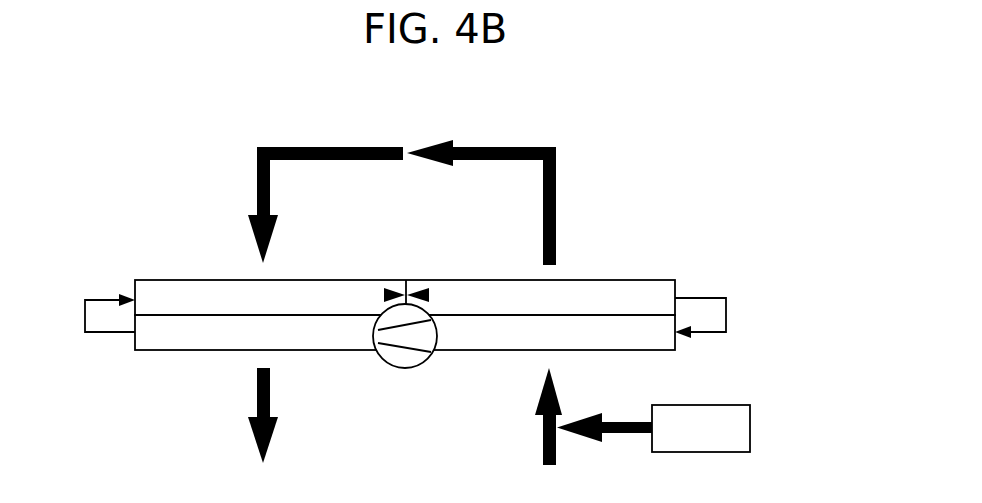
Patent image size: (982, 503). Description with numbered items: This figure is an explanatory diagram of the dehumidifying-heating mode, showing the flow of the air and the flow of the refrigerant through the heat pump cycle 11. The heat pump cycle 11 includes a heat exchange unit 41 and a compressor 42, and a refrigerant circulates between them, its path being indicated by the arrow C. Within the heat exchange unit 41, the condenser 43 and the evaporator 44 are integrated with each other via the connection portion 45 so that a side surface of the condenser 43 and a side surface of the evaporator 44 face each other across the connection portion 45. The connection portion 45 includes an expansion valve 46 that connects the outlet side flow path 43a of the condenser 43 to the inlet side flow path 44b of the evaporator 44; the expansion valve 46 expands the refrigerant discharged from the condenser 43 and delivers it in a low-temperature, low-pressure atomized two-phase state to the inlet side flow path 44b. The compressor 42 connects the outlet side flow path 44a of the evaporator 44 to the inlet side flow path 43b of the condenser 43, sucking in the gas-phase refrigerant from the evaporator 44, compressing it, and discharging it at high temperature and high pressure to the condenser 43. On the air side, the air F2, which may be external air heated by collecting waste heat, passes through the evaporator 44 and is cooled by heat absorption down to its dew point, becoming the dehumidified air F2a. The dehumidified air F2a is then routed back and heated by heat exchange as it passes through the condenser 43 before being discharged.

The heat exchange unit 41 is at (735, 246).
The heat pump cycle 11 is at (451, 306).
The compressor 42 is at (403, 369).
The condenser 43 is at (340, 272).
The outlet side flow path of the condenser 43a is at (168, 279).
The inlet side flow path of the condenser 43b is at (160, 351).
The evaporator 44 is at (656, 271).
The outlet side flow path of the evaporator 44a is at (472, 351).
The inlet side flow path of the evaporator 44b is at (476, 279).
The connection portion 45 is at (430, 237).
The expansion valve 46 is at (411, 279).
The arrow C (refrigerant flow) C is at (728, 313).
The air F2 is at (556, 456).
The dehumidified air F2a is at (489, 146).